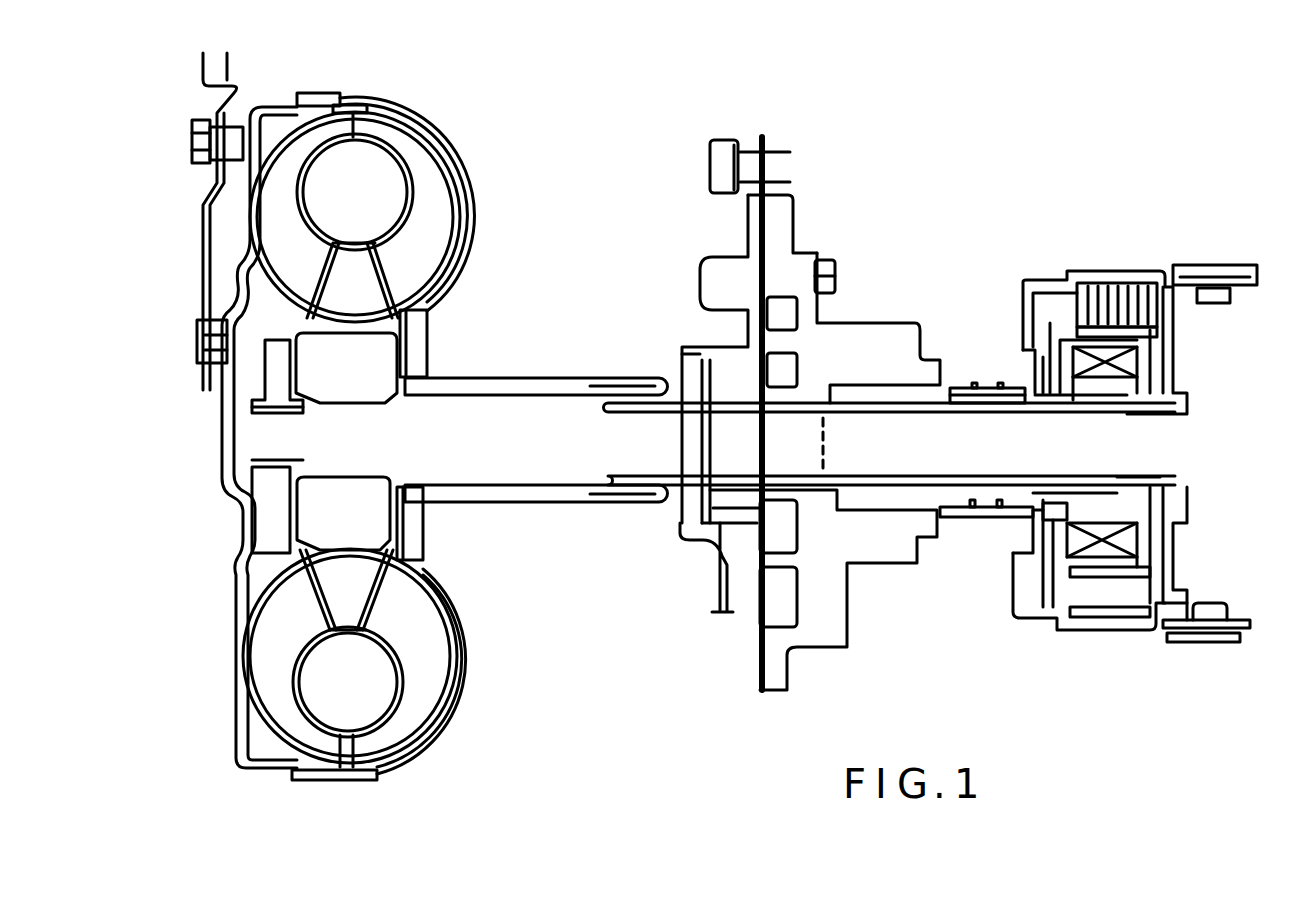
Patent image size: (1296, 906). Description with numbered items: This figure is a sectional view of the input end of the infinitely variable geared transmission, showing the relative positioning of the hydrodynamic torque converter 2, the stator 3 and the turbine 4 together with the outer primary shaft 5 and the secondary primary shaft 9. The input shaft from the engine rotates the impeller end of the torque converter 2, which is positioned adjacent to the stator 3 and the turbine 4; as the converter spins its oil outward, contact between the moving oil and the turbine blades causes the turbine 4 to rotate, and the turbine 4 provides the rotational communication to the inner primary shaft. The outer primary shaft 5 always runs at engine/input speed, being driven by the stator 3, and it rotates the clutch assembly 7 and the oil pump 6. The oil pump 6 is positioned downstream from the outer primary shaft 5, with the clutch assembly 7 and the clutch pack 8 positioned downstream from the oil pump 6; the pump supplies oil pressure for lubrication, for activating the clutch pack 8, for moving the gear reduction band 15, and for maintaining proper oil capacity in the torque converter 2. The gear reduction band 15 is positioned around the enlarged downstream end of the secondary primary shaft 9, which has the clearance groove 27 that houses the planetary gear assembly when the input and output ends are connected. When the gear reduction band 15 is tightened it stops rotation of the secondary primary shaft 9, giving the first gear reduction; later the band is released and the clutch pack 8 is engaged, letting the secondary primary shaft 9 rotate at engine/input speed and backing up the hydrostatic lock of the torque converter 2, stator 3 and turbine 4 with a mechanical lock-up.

The hydrodynamic torque converter 2 is at (455, 216).
The stator 3 is at (377, 296).
The turbine 4 is at (290, 125).
The outer primary shaft 5 is at (535, 384).
The oil pump 6 is at (808, 360).
The clutch assembly 7 is at (958, 382).
The clutch pack 8 is at (1148, 285).
The secondary primary shaft 9 is at (867, 413).
The gear reduction band 15 is at (1204, 270).
The clearance groove 27 is at (1204, 349).